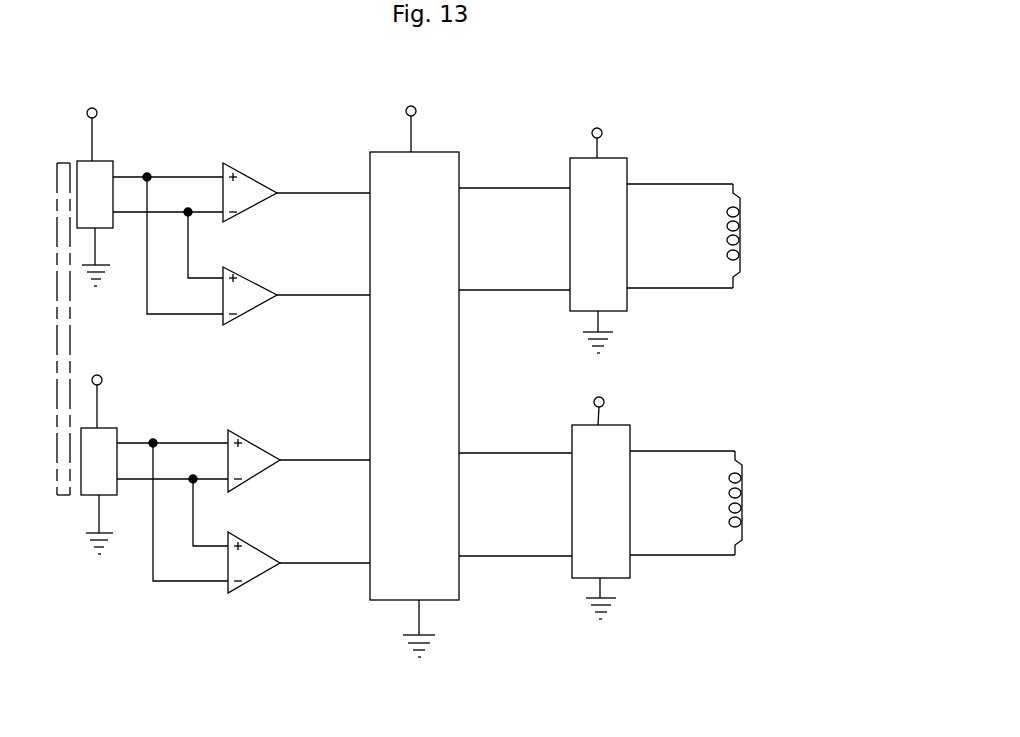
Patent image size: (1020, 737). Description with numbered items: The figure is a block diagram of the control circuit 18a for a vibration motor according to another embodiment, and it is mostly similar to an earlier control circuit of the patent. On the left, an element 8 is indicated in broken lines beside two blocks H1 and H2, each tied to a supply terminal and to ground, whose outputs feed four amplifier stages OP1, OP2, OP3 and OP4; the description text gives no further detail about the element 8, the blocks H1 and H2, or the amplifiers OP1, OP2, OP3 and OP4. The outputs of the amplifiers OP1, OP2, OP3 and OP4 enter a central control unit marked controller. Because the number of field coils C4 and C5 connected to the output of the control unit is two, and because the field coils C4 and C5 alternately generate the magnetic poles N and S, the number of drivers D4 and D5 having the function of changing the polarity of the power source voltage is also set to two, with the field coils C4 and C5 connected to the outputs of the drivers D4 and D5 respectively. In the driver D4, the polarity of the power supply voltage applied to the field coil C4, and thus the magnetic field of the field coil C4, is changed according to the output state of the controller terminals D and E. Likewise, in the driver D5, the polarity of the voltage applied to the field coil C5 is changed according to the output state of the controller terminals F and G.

The motor drive circuit 18a is at (697, 141).
The rotor / magnet 8 is at (63, 332).
The Hall sensor H1 is at (105, 193).
The Hall sensor H2 is at (110, 460).
The operational amplifier OP1 is at (255, 183).
The operational amplifier OP2 is at (255, 287).
The operational amplifier OP3 is at (259, 452).
The operational amplifier OP4 is at (259, 554).
The driver D4 is at (605, 236).
The driver D5 is at (607, 503).
The field coil C4 is at (750, 236).
The field coil C5 is at (752, 503).